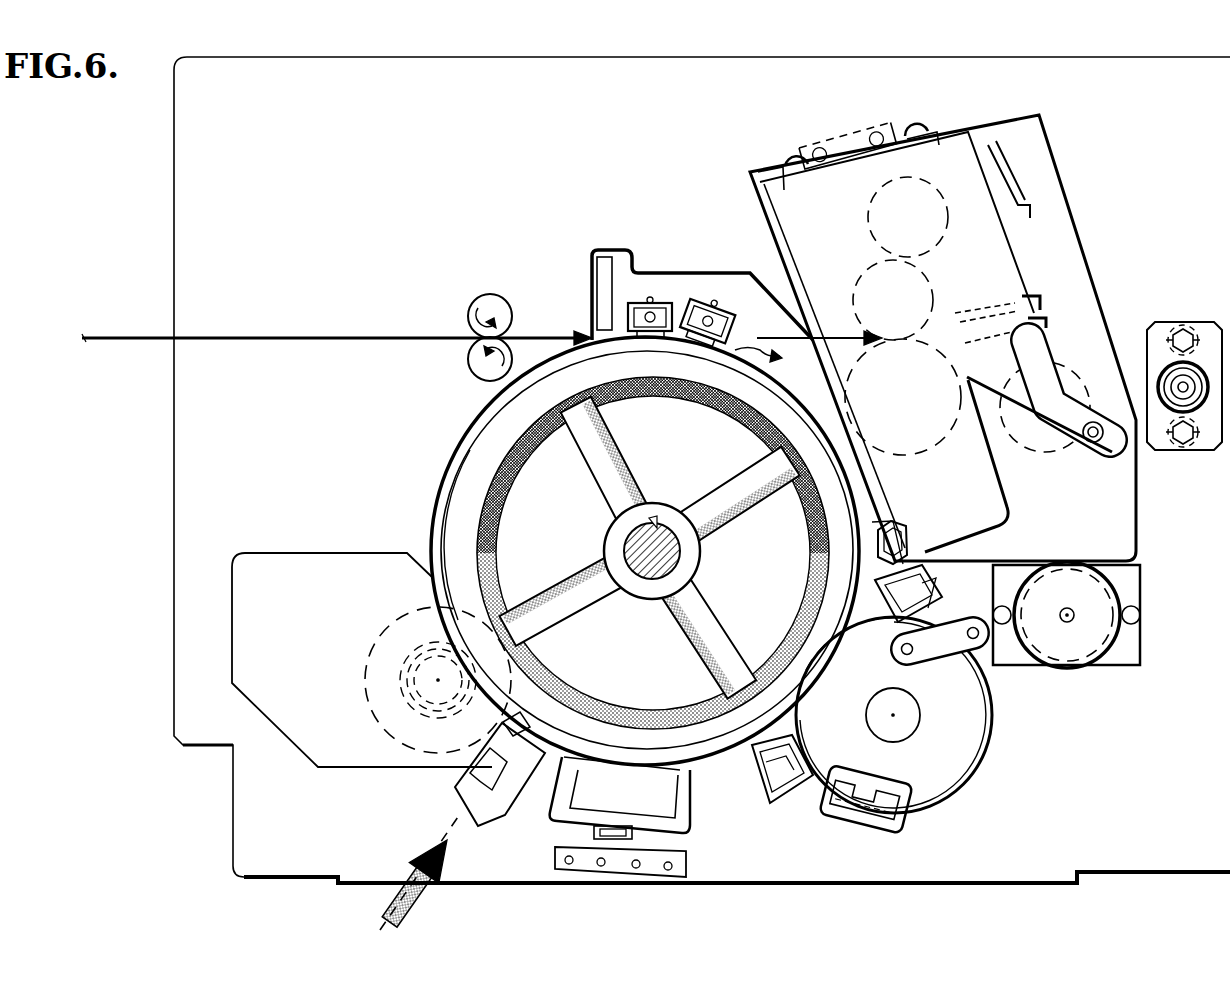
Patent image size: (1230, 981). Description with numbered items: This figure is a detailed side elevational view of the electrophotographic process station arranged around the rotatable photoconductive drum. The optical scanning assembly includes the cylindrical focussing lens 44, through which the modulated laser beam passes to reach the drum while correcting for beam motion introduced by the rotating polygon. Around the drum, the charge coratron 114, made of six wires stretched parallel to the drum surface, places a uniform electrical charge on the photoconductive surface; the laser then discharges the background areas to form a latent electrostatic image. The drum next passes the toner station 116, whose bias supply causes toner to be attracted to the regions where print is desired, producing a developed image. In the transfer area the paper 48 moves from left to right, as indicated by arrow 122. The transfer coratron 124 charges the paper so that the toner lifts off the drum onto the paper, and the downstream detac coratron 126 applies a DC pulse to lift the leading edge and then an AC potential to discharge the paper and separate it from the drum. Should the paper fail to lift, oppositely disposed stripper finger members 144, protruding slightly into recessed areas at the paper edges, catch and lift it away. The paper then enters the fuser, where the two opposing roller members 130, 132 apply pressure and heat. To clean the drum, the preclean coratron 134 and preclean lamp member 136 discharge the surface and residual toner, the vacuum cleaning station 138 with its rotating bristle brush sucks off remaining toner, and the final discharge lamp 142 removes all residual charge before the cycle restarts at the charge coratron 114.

The cylindrical focussing lens 44 is at (456, 797).
The paper 48 is at (230, 340).
The charge coratron 114 is at (552, 812).
The toner station 116 is at (300, 680).
The arrow 122 is at (544, 338).
The transfer coratron 124 is at (656, 300).
The detac coratron 126 is at (703, 302).
The roller member 130 is at (855, 293).
The roller member 132 is at (948, 478).
The preclean coratron 134 is at (906, 526).
The preclean lamp member 136 is at (915, 582).
The vacuum cleaning station 138 is at (988, 740).
The final discharge lamp 142 is at (762, 797).
The stripper finger members 144 is at (780, 320).